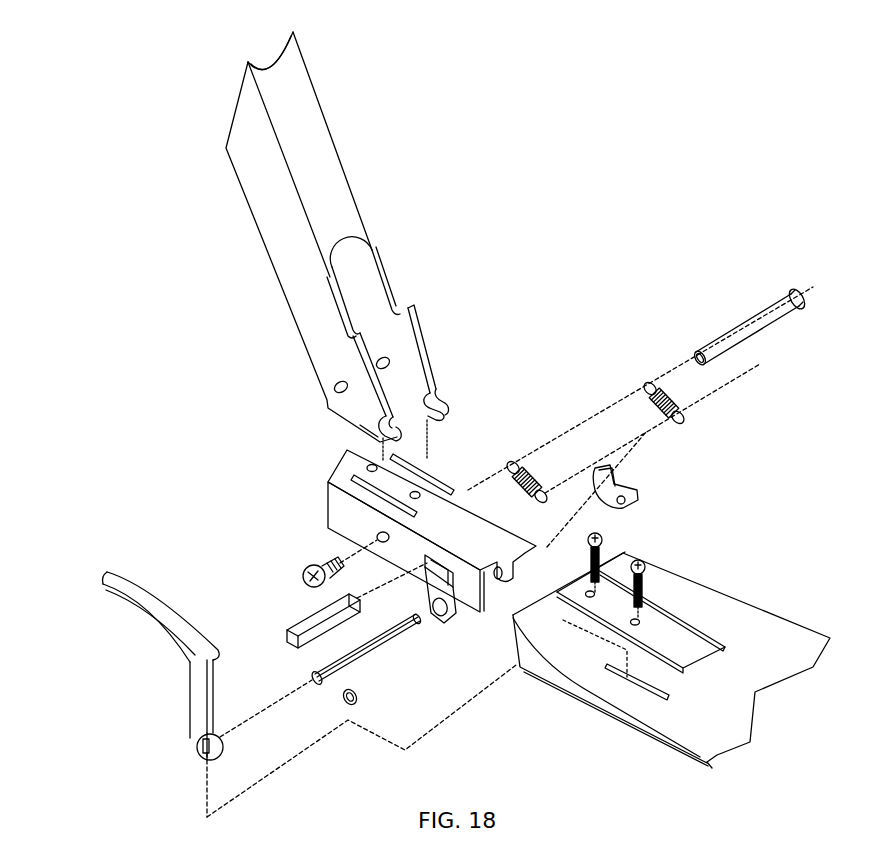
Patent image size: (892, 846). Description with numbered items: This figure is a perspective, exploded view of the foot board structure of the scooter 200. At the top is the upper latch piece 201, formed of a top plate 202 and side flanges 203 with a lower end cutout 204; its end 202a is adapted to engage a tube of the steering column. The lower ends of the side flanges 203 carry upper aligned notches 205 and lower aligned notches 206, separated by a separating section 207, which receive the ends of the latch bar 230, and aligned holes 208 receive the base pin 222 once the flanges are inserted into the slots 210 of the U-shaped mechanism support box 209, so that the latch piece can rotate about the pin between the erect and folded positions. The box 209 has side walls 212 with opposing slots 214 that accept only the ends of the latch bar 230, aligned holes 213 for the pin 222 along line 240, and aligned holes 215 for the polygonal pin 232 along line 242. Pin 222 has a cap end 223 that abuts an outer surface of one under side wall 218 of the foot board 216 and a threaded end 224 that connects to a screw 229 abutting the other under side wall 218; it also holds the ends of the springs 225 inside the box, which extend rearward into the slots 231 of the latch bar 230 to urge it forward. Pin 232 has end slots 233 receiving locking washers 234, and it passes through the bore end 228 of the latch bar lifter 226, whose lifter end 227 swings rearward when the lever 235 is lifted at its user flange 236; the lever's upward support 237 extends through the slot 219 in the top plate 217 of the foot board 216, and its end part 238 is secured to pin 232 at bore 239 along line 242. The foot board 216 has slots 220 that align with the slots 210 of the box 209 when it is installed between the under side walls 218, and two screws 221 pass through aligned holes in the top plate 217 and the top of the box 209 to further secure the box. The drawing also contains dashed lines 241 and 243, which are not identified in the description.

The foot board structure scooter 200 is at (451, 205).
The upper latch piece 201 is at (248, 236).
The top plate 202 is at (330, 135).
The end of upper latch piece 202a is at (277, 56).
The side flanges 203 is at (362, 307).
The lower end cutout 204 is at (367, 285).
The upper aligned notches 205 is at (366, 328).
The lower aligned notches 206 is at (401, 420).
The separating section 207 is at (431, 338).
The aligned holes 208 is at (376, 363).
The U-shaped mechanism support box 209 is at (470, 520).
The slots 210 is at (385, 454).
The side walls 212 is at (331, 505).
The aligned holes 213 is at (372, 536).
The slots 214 is at (457, 590).
The aligned holes 215 is at (500, 580).
The foot board 216 is at (771, 725).
The top plate 217 is at (695, 742).
The under side walls 218 is at (543, 672).
The slot 219 is at (635, 694).
The slots 220 is at (676, 657).
The screws 221 is at (606, 547).
The base pin 222 is at (720, 327).
The cap end 223 is at (781, 289).
The threaded end 224 is at (691, 348).
The springs 225 is at (525, 470).
The latch bar lifter 226 is at (645, 490).
The lifter end 227 is at (614, 473).
The bore end 228 is at (647, 498).
The screw 229 is at (304, 568).
The latch bar 230 is at (283, 633).
The slots 231 is at (336, 602).
The polygonal pin 232 is at (367, 656).
The end slots 233 is at (306, 676).
The locking washers 234 is at (362, 700).
The lever 235 is at (142, 648).
The user flange 236 is at (141, 602).
The upward support 237 is at (200, 693).
The end part 238 is at (196, 745).
The bore 239 is at (206, 756).
The line 240 is at (575, 423).
The axis line 241 is at (647, 437).
The line 242 is at (273, 708).
The axis line 243 is at (310, 752).